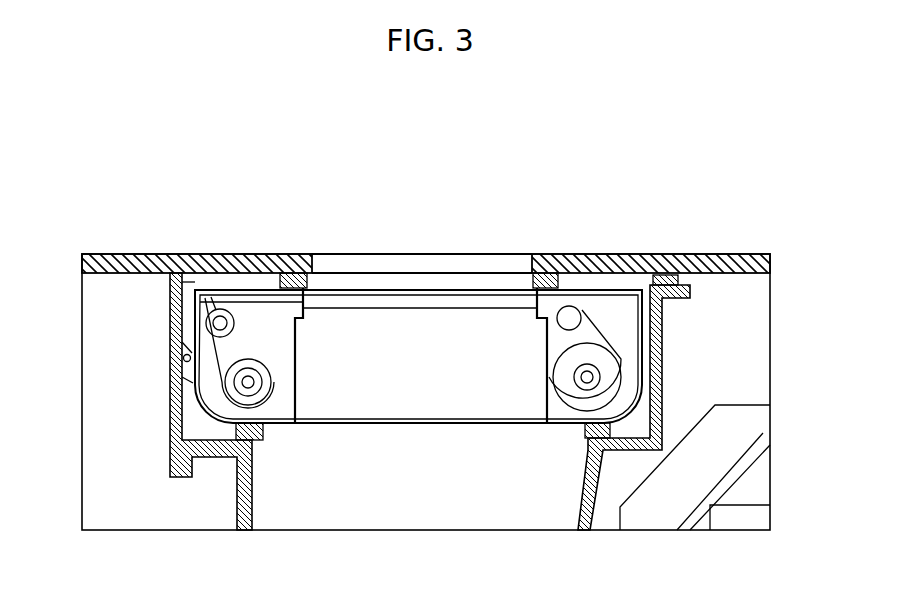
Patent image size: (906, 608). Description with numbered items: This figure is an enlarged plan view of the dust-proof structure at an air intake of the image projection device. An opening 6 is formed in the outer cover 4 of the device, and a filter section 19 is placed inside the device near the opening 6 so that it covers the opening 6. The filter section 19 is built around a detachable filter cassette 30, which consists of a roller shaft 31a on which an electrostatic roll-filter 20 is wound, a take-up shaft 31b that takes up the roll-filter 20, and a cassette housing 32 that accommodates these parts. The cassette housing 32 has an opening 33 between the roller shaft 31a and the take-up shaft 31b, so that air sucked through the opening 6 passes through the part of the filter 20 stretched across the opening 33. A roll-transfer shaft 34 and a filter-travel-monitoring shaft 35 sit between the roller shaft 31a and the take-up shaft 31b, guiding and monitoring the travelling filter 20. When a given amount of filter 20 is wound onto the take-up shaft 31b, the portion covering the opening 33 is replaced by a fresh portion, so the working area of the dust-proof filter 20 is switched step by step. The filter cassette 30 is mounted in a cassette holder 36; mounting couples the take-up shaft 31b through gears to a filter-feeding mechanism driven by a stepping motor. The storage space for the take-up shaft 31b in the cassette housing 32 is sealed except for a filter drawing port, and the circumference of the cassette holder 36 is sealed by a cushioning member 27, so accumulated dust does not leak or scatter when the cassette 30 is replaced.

The outer cover 4 is at (716, 256).
The opening 6 is at (508, 265).
The cushioning member 27 is at (292, 278).
The filter section 19 is at (283, 430).
The cassette housing 32 is at (642, 332).
The cassette holder 36 is at (638, 418).
The filter cassette 30 is at (200, 382).
The opening 33 is at (425, 290).
The electrostatic roll-filter 20 is at (490, 305).
The filter-travel-monitoring shaft 35 is at (219, 312).
The roll-transfer shaft 34 is at (570, 312).
The take-up shaft 31b is at (236, 396).
The roller shaft 31a is at (602, 377).